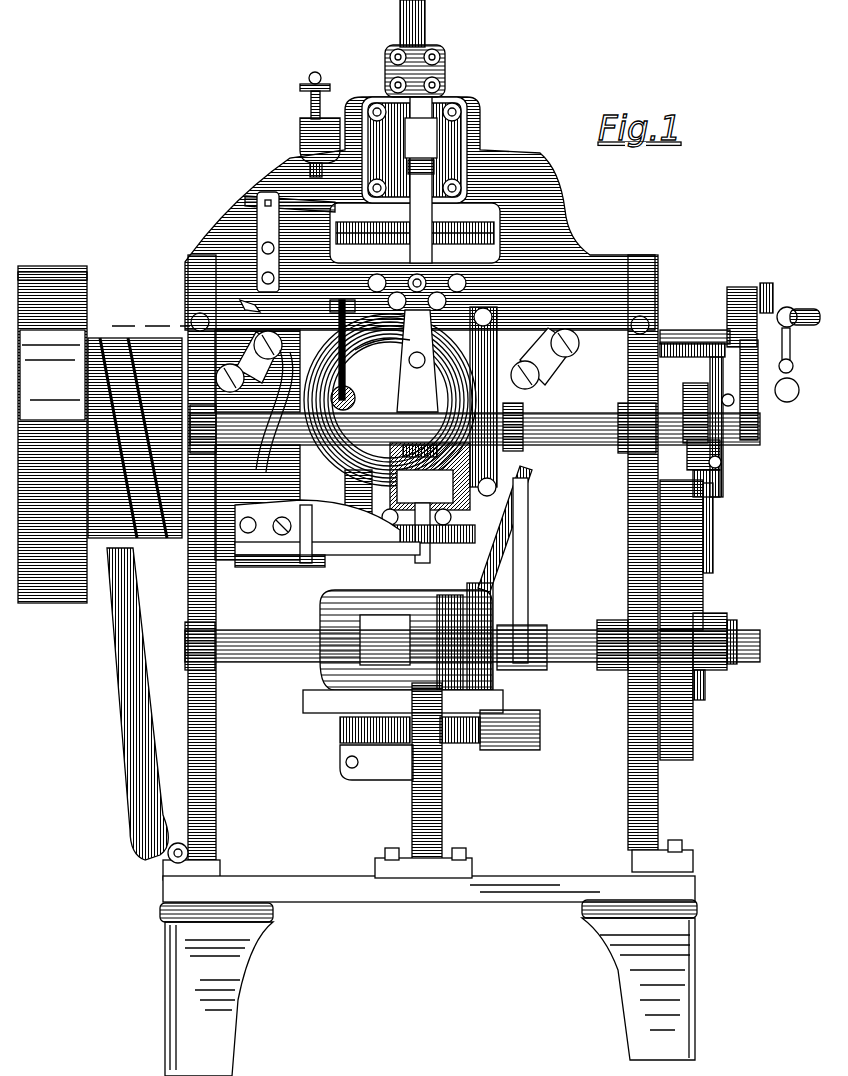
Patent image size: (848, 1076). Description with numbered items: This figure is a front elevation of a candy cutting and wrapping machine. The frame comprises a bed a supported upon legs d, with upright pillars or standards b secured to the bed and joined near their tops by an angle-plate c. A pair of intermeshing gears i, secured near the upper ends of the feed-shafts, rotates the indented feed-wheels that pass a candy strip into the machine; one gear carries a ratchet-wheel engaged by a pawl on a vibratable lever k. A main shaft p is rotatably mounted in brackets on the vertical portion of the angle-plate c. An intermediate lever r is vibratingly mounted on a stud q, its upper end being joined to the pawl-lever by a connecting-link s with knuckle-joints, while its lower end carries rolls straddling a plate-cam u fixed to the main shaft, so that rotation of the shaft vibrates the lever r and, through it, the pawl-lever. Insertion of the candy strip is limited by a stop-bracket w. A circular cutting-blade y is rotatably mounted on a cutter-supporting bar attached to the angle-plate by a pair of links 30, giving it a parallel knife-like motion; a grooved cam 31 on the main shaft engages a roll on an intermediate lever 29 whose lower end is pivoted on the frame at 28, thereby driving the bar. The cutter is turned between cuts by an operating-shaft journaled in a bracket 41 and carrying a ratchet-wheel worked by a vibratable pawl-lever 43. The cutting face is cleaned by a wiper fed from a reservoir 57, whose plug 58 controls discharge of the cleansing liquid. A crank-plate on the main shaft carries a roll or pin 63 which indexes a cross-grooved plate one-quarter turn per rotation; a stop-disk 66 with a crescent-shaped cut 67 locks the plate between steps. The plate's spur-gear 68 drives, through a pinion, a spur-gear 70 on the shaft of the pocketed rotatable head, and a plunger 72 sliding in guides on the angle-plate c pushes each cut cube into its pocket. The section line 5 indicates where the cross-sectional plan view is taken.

The plunger 72 is at (425, 36).
The plug 58 is at (311, 109).
The reservoir 57 is at (300, 146).
The connecting-link s is at (280, 197).
The vibratable lever k is at (463, 172).
The intermeshing gears i is at (415, 233).
The angle-plate c is at (588, 256).
The intermediate lever r is at (220, 302).
The line 5 is at (797, 354).
The links 30 is at (249, 361).
The stud q is at (325, 355).
The plate-cam u is at (274, 411).
The circular cutting-blade y is at (382, 347).
The stop-bracket w is at (390, 398).
The stop-disk 66 is at (700, 340).
The bracket 41 is at (676, 350).
The vibratable pawl-lever 43 is at (757, 416).
The crescent-shaped cut 67 is at (720, 447).
The roll or pin 63 is at (715, 472).
The main shaft p is at (560, 470).
The spur-gear 68 is at (703, 552).
The grooved cam 31 is at (145, 538).
The intermediate lever 29 is at (122, 686).
The spur-gear 70 is at (693, 728).
The upright pillars b is at (218, 832).
The pivot 28 is at (168, 858).
The bed a is at (517, 900).
The legs d is at (240, 1025).